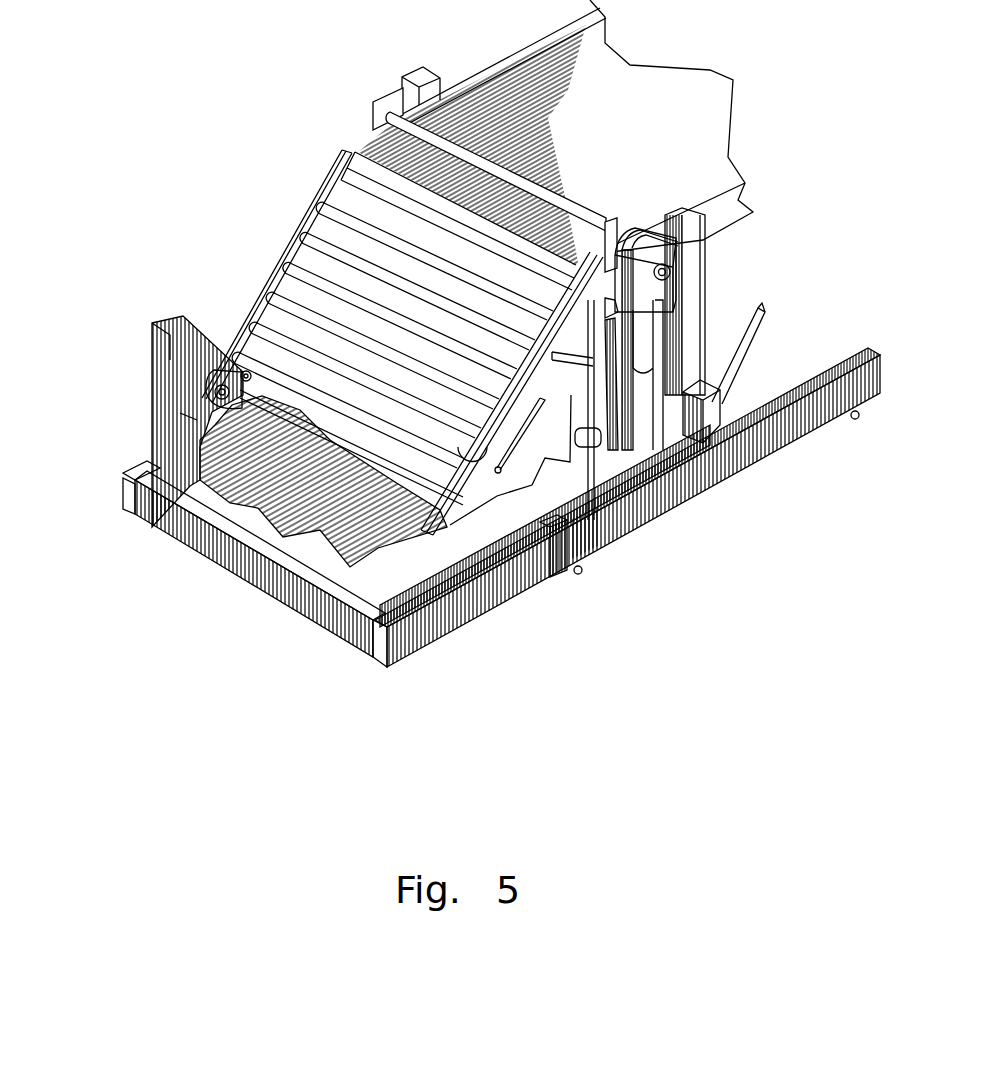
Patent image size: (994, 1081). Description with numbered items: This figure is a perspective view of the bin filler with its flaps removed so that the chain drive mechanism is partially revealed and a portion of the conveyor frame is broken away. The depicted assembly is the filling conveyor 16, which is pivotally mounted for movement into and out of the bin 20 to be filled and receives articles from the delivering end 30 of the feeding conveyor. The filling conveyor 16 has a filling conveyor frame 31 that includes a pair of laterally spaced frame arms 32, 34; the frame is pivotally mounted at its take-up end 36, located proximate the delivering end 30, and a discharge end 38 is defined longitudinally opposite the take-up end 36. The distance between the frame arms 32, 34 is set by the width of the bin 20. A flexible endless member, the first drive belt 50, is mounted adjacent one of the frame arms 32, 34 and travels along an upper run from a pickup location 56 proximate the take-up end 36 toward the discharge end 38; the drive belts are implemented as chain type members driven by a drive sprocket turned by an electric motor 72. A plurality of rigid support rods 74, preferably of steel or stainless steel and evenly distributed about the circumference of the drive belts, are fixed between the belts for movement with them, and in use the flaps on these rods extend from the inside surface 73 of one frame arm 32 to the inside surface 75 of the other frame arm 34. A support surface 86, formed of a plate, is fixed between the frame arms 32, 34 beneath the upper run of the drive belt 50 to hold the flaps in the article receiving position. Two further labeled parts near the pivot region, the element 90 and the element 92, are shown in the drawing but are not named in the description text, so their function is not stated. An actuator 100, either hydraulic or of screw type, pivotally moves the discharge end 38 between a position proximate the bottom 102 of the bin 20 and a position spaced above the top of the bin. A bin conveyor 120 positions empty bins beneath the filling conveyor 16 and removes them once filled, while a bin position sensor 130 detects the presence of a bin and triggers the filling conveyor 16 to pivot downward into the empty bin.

The filling conveyor 16 is at (258, 148).
The bin 20 is at (124, 400).
The delivering end 30 is at (386, 95).
The filling conveyor frame 31 is at (311, 220).
The frame arm 32 is at (467, 507).
The frame arm 34 is at (298, 237).
The take-up end 36 is at (328, 190).
The discharge end 38 is at (176, 377).
The first drive belt 50 is at (258, 345).
The pickup location 56 is at (373, 160).
The electric motor 72 is at (667, 290).
The inside surface 73 is at (430, 596).
The support rods 74 is at (346, 182).
The inside surface 75 is at (208, 385).
The support surface 86 is at (411, 270).
The post cap 90 is at (620, 518).
The pivot pin 92 is at (233, 368).
The actuator 100 is at (600, 468).
The bottom 102 is at (308, 494).
The bin conveyor 120 is at (415, 626).
The bin position sensor 130 is at (718, 406).